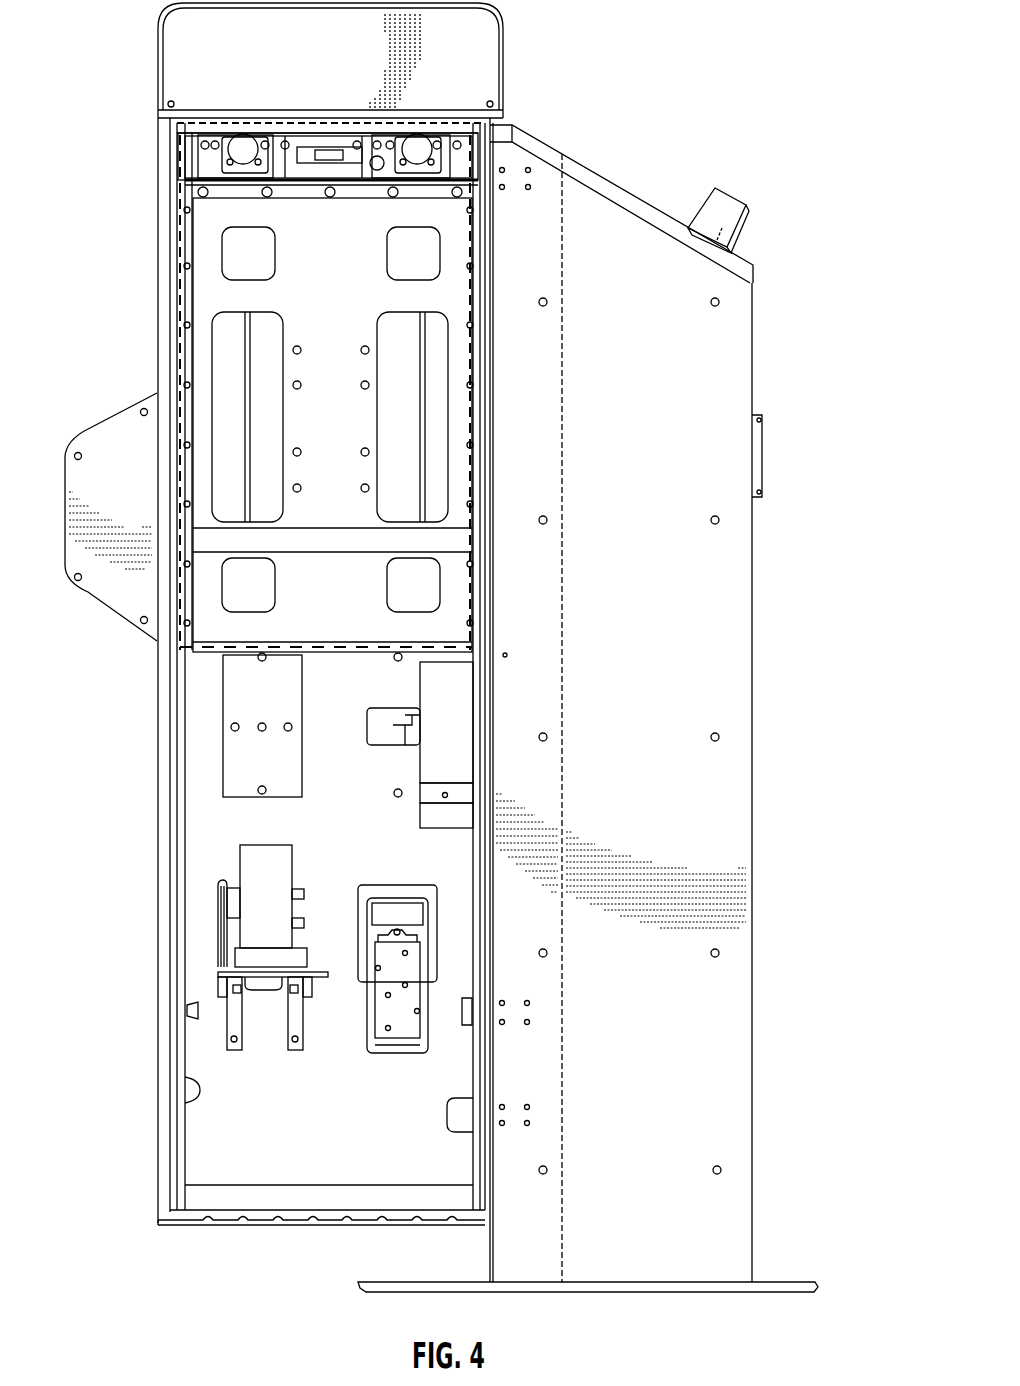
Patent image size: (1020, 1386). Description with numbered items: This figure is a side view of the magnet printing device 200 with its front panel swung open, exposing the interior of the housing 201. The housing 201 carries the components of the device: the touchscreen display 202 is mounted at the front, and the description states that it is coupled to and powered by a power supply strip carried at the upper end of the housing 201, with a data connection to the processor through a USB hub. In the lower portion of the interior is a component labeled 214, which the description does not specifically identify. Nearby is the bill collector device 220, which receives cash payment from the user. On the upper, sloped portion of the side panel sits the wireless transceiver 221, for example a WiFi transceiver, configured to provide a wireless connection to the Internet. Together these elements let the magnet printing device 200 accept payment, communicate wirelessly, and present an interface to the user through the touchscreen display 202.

The magnet printing device 200 is at (667, 50).
The housing 201 is at (117, 464).
The touchscreen display 202 is at (177, 222).
The pump assembly 214 is at (247, 872).
The bill collector device 220 is at (393, 1042).
The wireless transceiver 221 is at (725, 205).